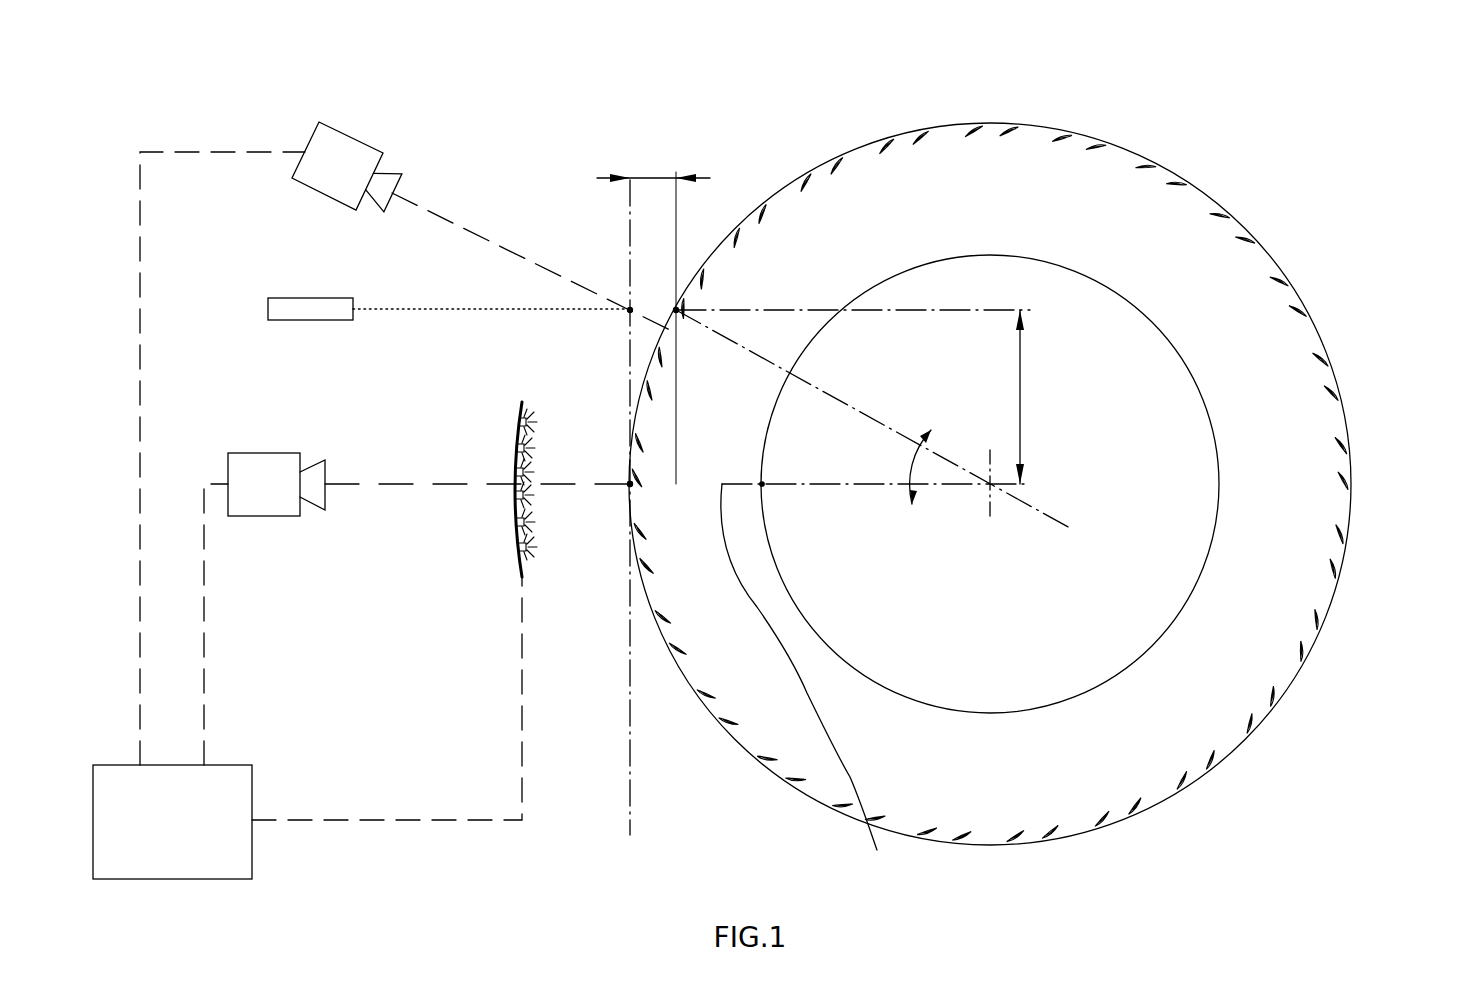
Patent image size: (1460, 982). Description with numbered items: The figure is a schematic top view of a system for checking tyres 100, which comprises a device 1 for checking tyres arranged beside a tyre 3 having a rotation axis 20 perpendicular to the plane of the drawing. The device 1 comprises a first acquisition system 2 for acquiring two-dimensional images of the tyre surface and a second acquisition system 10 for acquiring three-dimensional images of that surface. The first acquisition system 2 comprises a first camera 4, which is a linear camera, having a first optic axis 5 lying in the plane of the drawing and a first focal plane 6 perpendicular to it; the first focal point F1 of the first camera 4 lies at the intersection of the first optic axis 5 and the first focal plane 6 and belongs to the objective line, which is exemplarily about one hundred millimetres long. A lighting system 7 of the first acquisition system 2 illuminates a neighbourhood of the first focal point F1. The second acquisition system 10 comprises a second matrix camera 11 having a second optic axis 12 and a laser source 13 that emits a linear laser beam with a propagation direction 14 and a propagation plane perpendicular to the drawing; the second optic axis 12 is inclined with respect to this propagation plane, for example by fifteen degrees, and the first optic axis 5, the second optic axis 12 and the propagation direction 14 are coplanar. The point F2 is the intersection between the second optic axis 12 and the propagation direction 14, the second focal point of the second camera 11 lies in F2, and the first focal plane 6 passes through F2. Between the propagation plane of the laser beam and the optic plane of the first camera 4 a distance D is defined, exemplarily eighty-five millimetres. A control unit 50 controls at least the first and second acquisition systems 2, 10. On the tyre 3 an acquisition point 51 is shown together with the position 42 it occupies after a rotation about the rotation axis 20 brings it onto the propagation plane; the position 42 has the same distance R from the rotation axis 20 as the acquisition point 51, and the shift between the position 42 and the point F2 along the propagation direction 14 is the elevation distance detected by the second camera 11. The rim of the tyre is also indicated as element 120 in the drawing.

The device for checking tyres 1 is at (167, 297).
The first acquisition system 2 is at (350, 532).
The tyre 3 is at (1012, 789).
The first camera 4 is at (248, 470).
The first optic axis 5 is at (413, 485).
The first focal plane 6 is at (627, 750).
The lighting system 7 is at (513, 562).
The second acquisition system 10 is at (382, 107).
The second matrix camera 11 is at (320, 145).
The second optic axis 12 is at (487, 240).
The laser source 13 is at (285, 310).
The propagation direction 14 is at (413, 310).
The rotation axis 20 is at (891, 430).
The position 42 is at (676, 310).
The control unit 50 is at (188, 836).
The acquisition point 51 is at (630, 484).
The system for checking tyres 100 is at (1355, 77).
The tire rim 120 is at (1028, 656).
The first focal point F1 is at (630, 484).
The second focal point F2 is at (630, 310).
The distance D is at (1031, 397).
The distance from the rotation axis R is at (804, 686).